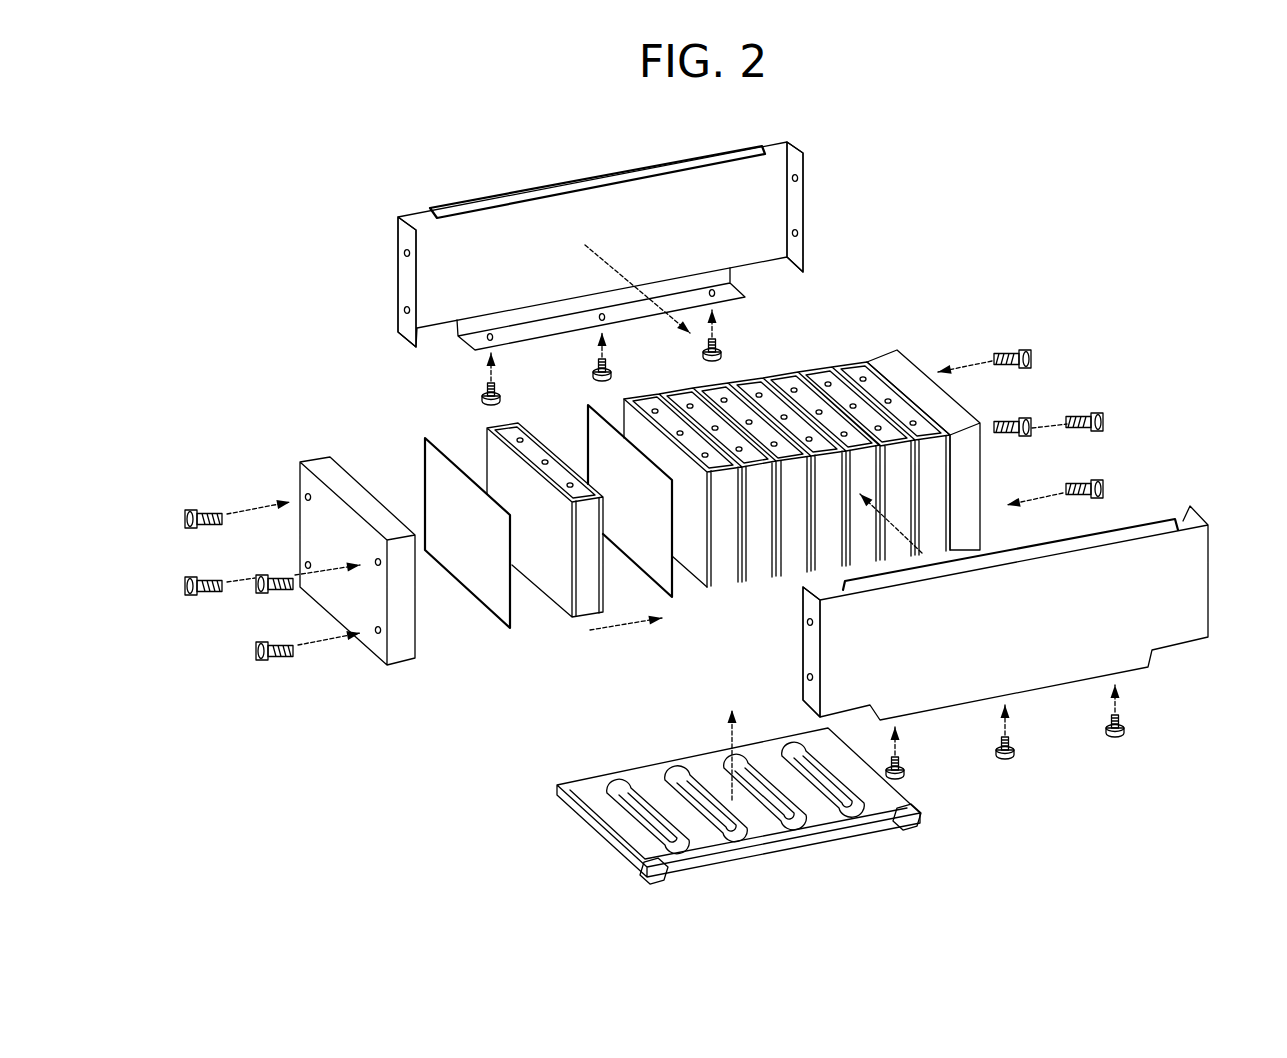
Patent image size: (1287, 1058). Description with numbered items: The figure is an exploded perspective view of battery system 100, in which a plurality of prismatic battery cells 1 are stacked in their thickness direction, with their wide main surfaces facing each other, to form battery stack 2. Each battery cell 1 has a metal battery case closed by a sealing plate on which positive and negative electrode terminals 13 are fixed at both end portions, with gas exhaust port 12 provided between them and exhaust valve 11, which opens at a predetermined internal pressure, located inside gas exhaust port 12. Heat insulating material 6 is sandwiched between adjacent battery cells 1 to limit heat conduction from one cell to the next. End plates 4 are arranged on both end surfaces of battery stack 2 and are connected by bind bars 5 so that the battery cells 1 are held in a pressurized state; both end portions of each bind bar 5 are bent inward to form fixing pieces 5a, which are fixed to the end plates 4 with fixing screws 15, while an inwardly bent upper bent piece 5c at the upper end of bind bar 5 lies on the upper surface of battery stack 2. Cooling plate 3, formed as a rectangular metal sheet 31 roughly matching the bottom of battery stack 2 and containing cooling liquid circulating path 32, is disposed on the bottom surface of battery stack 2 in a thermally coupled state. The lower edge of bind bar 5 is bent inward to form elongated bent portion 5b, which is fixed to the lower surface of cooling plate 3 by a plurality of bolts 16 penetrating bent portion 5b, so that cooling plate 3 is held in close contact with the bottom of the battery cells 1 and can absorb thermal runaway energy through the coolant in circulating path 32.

The battery system 100 is at (1085, 240).
The battery cell 1 is at (683, 525).
The battery stack 2 is at (683, 571).
The cooling plate 3 is at (733, 819).
The end plate 4 is at (315, 460).
The bind bar 5 is at (766, 454).
The fixing piece 5a is at (398, 280).
The bent portion 5b is at (735, 287).
The upper bent piece 5c is at (520, 195).
The heat insulating material 6 is at (445, 490).
The exhaust valve 11 is at (558, 448).
The gas exhaust port 12 is at (535, 457).
The electrode terminal 13 is at (505, 420).
The fixing screw 15 is at (203, 510).
The bolt 16 is at (722, 347).
The metal sheet 31 is at (727, 833).
The circulating path 32 is at (913, 802).